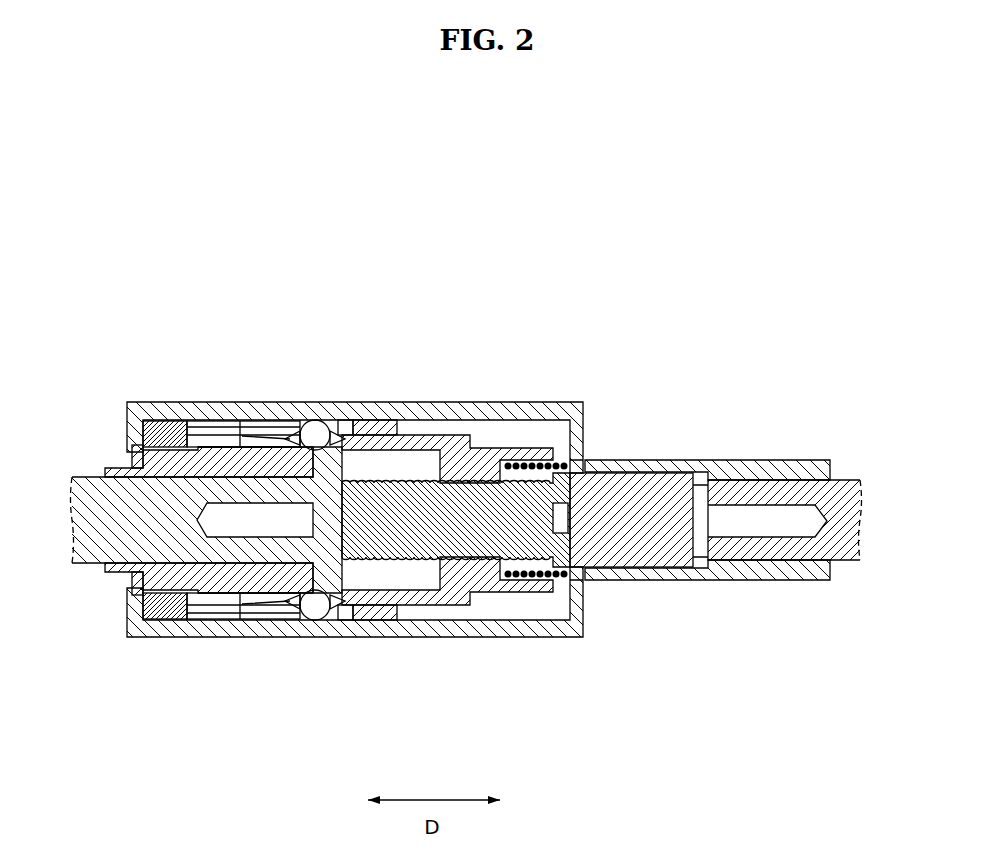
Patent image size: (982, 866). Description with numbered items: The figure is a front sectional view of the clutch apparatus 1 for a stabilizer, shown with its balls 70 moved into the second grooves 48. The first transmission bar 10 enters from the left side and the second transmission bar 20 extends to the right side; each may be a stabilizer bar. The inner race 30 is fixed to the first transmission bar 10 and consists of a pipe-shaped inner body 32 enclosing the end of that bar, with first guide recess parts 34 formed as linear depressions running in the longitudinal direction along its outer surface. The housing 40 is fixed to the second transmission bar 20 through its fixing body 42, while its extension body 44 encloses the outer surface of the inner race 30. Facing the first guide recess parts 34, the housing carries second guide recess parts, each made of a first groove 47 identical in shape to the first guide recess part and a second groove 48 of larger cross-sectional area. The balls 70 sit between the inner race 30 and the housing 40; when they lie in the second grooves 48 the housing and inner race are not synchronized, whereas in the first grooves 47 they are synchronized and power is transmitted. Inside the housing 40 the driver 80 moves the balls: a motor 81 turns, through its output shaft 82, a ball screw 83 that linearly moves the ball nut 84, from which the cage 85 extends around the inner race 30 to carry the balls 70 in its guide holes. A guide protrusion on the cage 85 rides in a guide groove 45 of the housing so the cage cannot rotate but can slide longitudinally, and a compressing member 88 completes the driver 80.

The clutch apparatus 1 is at (596, 304).
The first transmission bar 10 is at (87, 550).
The second transmission bar 20 is at (847, 562).
The inner race 30 is at (201, 454).
The inner body 32 is at (170, 458).
The first guide recess part 34 is at (263, 452).
The housing 40 is at (355, 457).
The fixing body 42 is at (786, 520).
The extension body 44 is at (514, 407).
The guide groove 45 is at (221, 600).
The first groove 47 is at (215, 622).
The second groove 48 is at (265, 622).
The ball 70 is at (318, 428).
The driver 80 is at (700, 578).
The motor 81 is at (648, 545).
The output shaft 82 is at (548, 578).
The ball screw 83 is at (380, 537).
The ball nut 84 is at (477, 590).
The cage 85 is at (288, 432).
The compressing member 88 is at (572, 452).